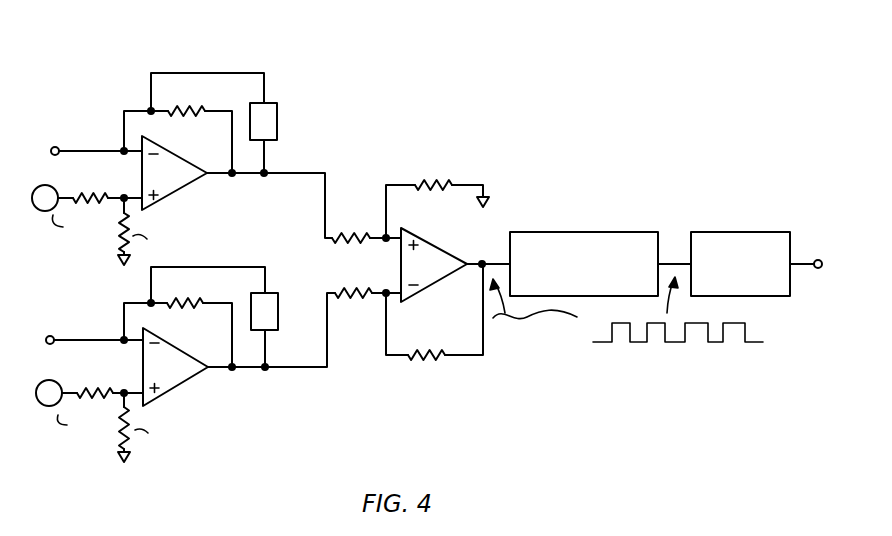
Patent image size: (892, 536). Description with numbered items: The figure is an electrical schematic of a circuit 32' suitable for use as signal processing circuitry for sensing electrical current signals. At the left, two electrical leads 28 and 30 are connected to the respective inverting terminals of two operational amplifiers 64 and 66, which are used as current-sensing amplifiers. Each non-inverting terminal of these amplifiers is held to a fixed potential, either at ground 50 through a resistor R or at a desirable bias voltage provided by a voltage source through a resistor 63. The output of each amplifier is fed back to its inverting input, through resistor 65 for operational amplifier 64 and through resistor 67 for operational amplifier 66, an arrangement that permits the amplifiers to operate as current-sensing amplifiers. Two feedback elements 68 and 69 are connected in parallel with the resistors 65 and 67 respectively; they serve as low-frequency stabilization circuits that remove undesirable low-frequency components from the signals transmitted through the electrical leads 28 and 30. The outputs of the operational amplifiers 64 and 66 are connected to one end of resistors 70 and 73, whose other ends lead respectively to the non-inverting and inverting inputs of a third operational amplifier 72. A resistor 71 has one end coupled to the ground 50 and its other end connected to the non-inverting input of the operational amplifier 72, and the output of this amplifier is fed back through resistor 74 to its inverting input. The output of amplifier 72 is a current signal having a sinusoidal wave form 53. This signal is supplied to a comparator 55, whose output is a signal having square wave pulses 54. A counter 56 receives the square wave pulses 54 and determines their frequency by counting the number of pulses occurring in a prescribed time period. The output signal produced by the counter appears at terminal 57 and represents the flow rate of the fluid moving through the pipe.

The circuit 32' is at (427, 243).
The electrical lead 28 is at (83, 150).
The electrical lead 30 is at (85, 338).
The resistor 63 is at (90, 193).
The operational amplifier 64 is at (183, 185).
The resistor 65 is at (190, 102).
The operational amplifier 66 is at (177, 387).
The resistor 67 is at (200, 305).
The feedback element 68 is at (278, 118).
The feedback element 69 is at (277, 293).
The resistor 70 is at (367, 233).
The resistor 71 is at (435, 180).
The operational amplifier 72 is at (417, 293).
The resistor 73 is at (370, 298).
The resistor 74 is at (427, 360).
The ground 50 is at (488, 204).
The sinusoidal wave form 53 is at (528, 322).
The square wave pulses 54 is at (680, 343).
The comparator 55 is at (598, 232).
The counter 56 is at (743, 232).
The terminal 57 is at (817, 268).